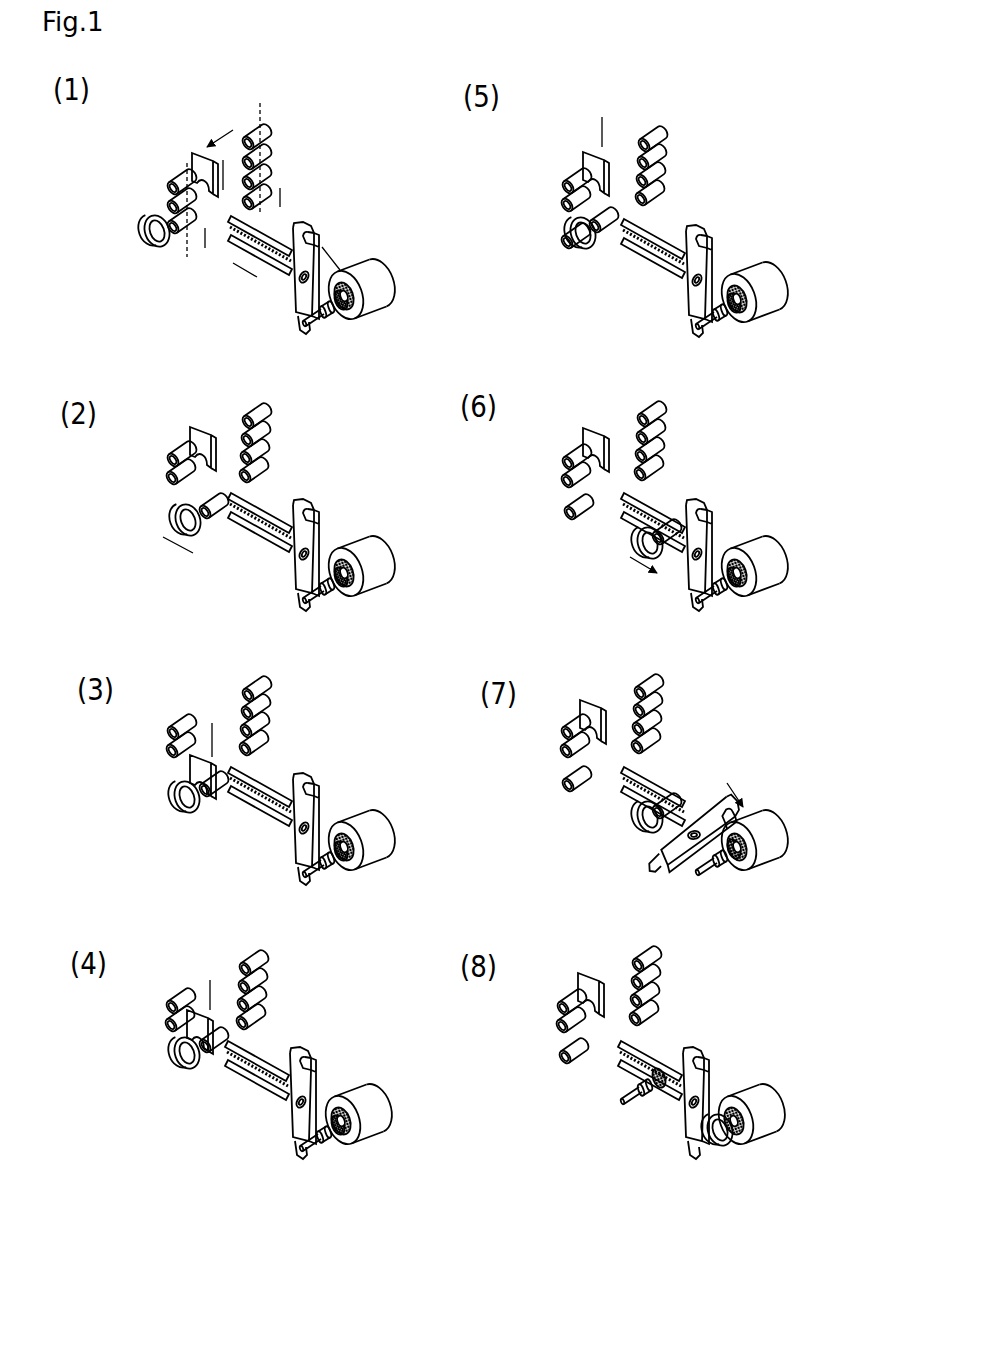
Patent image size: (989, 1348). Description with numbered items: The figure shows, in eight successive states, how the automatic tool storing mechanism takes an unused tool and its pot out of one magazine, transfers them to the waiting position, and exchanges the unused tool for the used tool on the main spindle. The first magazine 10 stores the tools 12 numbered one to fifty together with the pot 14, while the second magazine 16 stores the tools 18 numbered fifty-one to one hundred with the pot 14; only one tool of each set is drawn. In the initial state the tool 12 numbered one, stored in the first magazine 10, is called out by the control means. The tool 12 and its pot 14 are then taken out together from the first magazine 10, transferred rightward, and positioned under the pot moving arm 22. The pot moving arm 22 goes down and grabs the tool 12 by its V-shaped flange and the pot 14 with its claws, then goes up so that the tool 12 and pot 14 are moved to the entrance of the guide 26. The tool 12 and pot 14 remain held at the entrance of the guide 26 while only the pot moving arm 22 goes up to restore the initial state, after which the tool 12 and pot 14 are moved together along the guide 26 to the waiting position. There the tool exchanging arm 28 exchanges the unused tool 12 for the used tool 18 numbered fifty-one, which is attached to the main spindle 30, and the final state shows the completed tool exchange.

The first magazine 10 is at (140, 193).
The tool 12 is at (147, 225).
The pot 14 is at (180, 177).
The second magazine 16 is at (315, 120).
The tool 18 is at (333, 325).
The pot moving arm 22 is at (193, 155).
The guide 26 is at (267, 503).
The tool exchanging arm 28 is at (319, 533).
The main spindle 30 is at (387, 303).